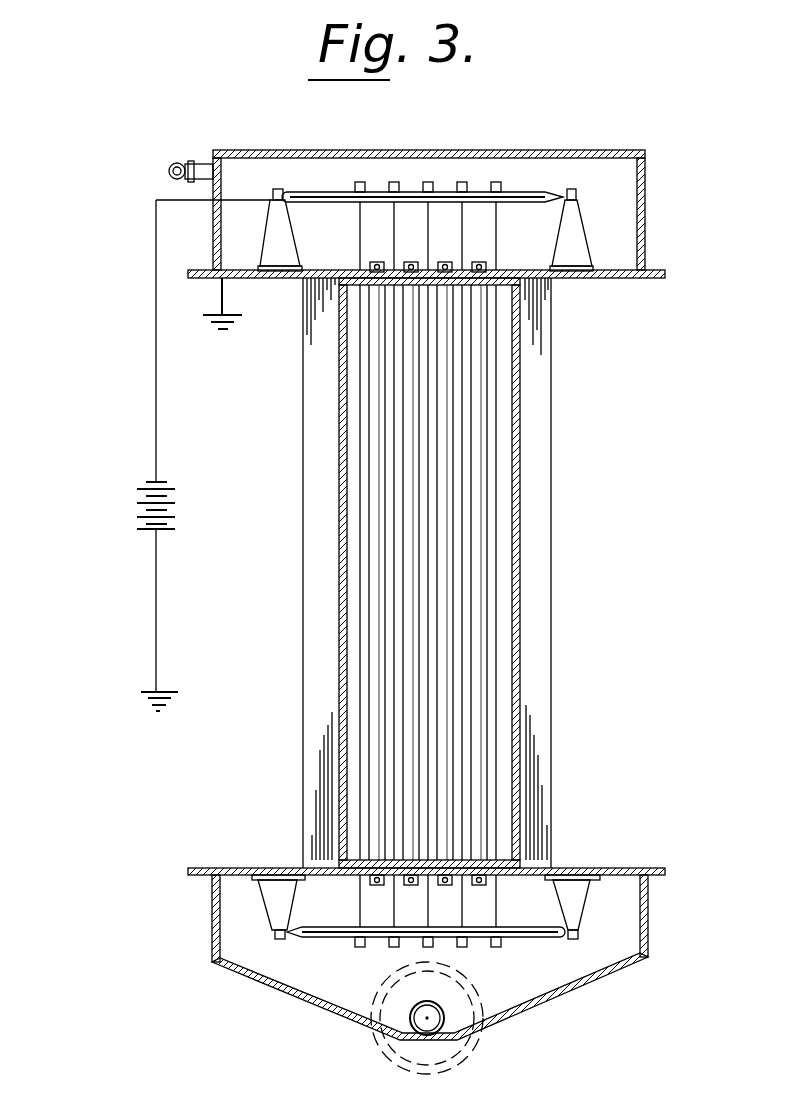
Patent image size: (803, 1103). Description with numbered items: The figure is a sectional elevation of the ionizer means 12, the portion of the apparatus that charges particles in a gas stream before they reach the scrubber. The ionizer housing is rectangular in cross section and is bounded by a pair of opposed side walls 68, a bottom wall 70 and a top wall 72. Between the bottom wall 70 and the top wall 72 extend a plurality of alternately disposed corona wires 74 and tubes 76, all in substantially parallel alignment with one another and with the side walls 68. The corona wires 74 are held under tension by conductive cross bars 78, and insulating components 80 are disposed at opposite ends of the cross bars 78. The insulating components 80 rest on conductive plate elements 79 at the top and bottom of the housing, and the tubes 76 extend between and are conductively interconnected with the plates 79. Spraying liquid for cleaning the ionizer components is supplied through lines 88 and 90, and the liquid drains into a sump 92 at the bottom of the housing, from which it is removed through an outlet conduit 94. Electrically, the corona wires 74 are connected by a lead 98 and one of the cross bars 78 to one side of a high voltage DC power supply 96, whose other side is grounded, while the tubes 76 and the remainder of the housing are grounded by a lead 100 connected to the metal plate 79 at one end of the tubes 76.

The ionizer means 12 is at (490, 133).
The side walls 68 is at (518, 380).
The bottom wall 70 is at (506, 862).
The top wall 72 is at (505, 282).
The corona wires 74 is at (497, 345).
The tubes 76 is at (487, 412).
The cross bars 78 is at (532, 190).
The conductive plate elements 79 is at (352, 270).
The insulating components 80 is at (584, 242).
The line 88 is at (169, 150).
The line 90 is at (207, 150).
The sump 92 is at (345, 997).
The outlet conduit 94 is at (435, 1018).
The high voltage DC power supply 96 is at (120, 513).
The lead 98 is at (156, 398).
The lead 100 is at (222, 298).